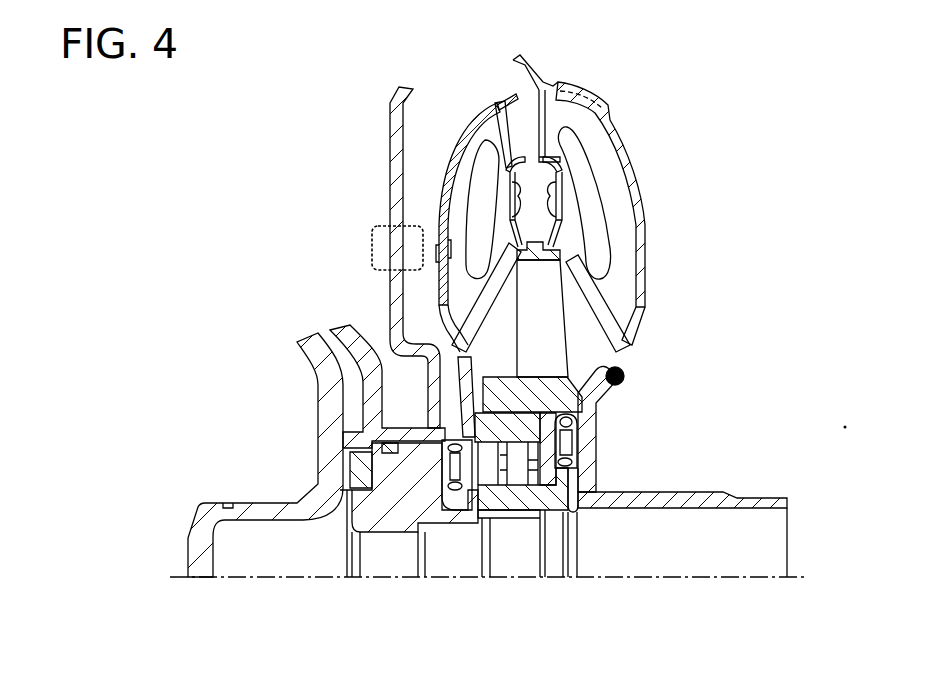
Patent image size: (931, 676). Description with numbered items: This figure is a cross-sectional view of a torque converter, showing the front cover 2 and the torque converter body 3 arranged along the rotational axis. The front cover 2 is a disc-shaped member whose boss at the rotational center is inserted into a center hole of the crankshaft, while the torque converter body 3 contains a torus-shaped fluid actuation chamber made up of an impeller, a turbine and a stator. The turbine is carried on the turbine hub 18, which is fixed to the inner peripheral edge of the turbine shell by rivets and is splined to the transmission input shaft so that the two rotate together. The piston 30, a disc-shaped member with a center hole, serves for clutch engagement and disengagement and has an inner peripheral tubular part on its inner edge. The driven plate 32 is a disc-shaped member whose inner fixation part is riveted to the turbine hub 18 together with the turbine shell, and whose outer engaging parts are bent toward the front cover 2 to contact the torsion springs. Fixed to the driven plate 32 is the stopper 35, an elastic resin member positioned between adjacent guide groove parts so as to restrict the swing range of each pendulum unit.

The front cover 2 is at (312, 356).
The torque converter body 3 is at (498, 95).
The turbine hub 18 is at (400, 530).
The piston 30 is at (360, 362).
The driven plate 32 is at (392, 118).
The stopper 35 is at (373, 237).